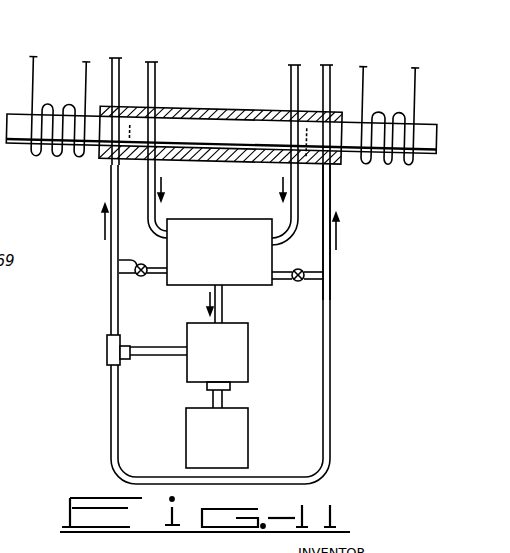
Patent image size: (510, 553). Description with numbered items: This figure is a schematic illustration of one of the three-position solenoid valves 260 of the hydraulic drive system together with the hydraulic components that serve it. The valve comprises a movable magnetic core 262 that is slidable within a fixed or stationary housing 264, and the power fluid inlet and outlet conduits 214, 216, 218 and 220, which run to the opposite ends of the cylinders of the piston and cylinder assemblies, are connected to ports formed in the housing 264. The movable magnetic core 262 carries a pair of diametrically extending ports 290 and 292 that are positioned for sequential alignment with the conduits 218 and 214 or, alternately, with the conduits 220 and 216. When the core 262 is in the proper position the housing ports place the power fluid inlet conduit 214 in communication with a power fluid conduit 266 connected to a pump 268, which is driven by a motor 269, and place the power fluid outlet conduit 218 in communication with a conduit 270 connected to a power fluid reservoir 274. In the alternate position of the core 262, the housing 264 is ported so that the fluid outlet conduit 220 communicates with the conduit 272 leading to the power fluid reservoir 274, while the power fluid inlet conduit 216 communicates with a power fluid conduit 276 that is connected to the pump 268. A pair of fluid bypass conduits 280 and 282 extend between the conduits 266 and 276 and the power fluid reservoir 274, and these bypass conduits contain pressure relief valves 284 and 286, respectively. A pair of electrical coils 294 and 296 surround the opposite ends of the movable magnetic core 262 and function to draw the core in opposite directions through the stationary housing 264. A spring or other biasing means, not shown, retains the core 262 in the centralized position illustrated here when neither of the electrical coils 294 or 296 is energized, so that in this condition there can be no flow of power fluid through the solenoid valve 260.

The power fluid inlet conduit 214 is at (115, 60).
The power fluid inlet conduit 216 is at (332, 66).
The power fluid outlet conduit 218 is at (298, 66).
The fluid outlet conduit 220 is at (155, 62).
The three-position solenoid valve 260 is at (212, 103).
The movable magnetic core 262 is at (228, 130).
The stationary housing 264 is at (160, 106).
The power fluid conduit 266 is at (118, 316).
The pump 268 is at (237, 366).
The motor 269 is at (237, 458).
The conduit 270 is at (290, 172).
The conduit 272 is at (153, 218).
The power fluid reservoir 274 is at (207, 282).
The power fluid conduit 276 is at (330, 193).
The fluid bypass conduit 280 is at (145, 278).
The fluid bypass conduit 282 is at (283, 281).
The pressure relief valve 284 is at (118, 259).
The pressure relief valve 286 is at (305, 270).
The port 290 is at (133, 129).
The port 292 is at (305, 131).
The electrical coil 294 is at (50, 162).
The electrical coil 296 is at (378, 165).